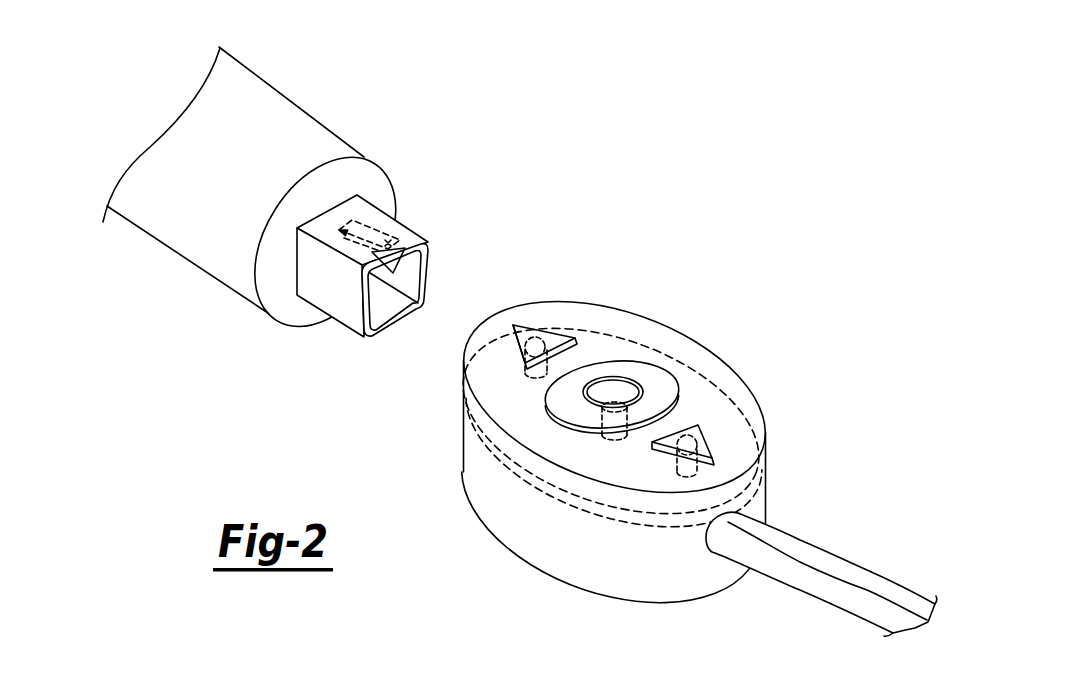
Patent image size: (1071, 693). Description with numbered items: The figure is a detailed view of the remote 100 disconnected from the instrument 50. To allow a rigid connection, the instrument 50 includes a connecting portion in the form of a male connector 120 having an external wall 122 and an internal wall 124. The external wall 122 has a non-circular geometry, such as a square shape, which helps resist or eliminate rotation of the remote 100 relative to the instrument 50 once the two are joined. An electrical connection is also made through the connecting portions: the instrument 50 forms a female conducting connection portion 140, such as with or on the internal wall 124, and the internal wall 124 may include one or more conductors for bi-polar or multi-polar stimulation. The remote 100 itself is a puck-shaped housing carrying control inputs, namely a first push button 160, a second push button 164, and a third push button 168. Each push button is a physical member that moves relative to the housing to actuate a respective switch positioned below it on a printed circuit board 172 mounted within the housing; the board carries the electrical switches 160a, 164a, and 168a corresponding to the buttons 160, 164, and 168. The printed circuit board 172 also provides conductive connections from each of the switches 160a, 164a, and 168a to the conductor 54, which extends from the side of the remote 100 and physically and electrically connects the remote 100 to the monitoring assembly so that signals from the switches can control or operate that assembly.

The instrument 50 is at (362, 115).
The male connector 120 is at (418, 226).
The external wall 122 is at (345, 247).
The internal wall 124 is at (407, 272).
The female conducting connection portion 140 is at (430, 245).
The remote 100 is at (781, 305).
The first push button 160 is at (555, 337).
The electrical switch 160a is at (533, 367).
The second push button 164 is at (705, 428).
The electrical switch 164a is at (698, 473).
The third push button 168 is at (650, 377).
The electrical switch 168a is at (715, 377).
The printed circuit board 172 is at (473, 430).
The conductor 54 is at (852, 567).